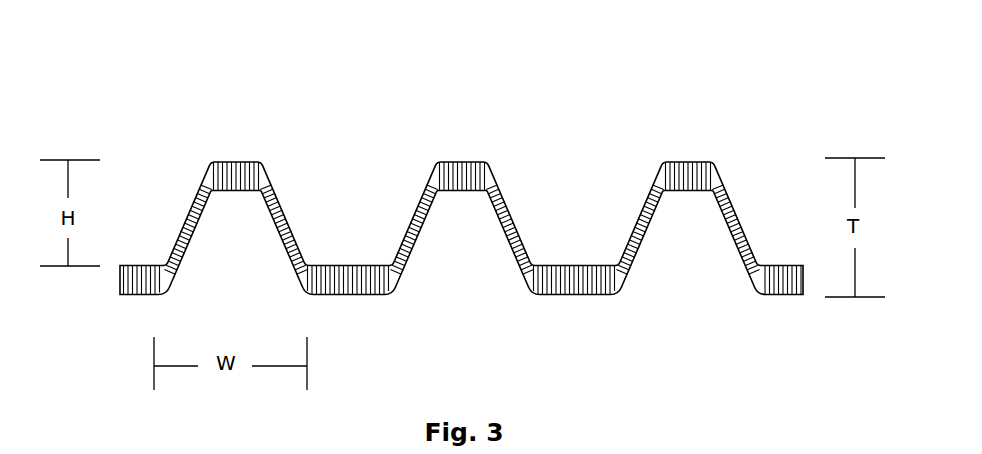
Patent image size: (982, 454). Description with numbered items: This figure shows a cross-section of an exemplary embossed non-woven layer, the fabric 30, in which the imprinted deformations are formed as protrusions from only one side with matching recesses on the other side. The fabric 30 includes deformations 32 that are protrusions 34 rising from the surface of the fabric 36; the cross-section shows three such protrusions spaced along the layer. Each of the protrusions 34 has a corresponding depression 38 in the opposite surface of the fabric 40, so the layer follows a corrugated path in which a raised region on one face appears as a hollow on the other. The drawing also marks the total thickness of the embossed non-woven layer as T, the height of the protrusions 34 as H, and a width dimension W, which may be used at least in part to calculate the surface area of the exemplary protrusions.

The fabric 30 is at (168, 122).
The deformations 32 is at (652, 140).
The protrusions 34 is at (168, 231).
The surface of the fabric 36 is at (730, 199).
The depressions 38 is at (229, 253).
The opposite surface of the fabric 40 is at (757, 288).